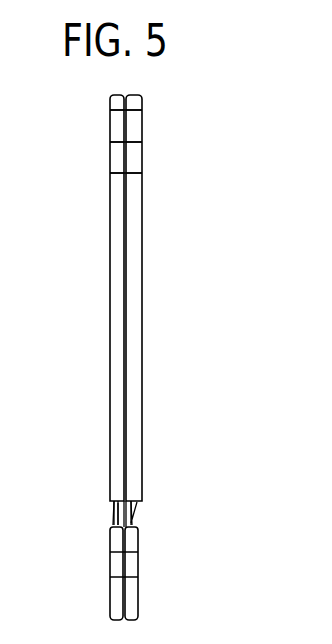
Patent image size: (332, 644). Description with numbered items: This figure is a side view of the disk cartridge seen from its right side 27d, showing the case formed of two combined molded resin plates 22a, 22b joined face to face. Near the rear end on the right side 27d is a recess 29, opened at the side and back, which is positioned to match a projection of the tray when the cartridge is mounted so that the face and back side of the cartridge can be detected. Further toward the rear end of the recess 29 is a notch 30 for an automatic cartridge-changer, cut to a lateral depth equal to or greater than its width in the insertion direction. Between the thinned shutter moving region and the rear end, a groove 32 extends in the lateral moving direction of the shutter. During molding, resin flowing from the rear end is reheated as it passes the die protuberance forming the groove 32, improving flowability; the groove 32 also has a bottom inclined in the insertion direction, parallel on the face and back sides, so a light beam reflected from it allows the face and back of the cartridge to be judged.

The resin plate 22a is at (116, 322).
The resin plate 22b is at (135, 283).
The right side 27d is at (135, 130).
The recess 29 is at (131, 523).
The notch 30 is at (132, 567).
The groove 32 is at (113, 516).